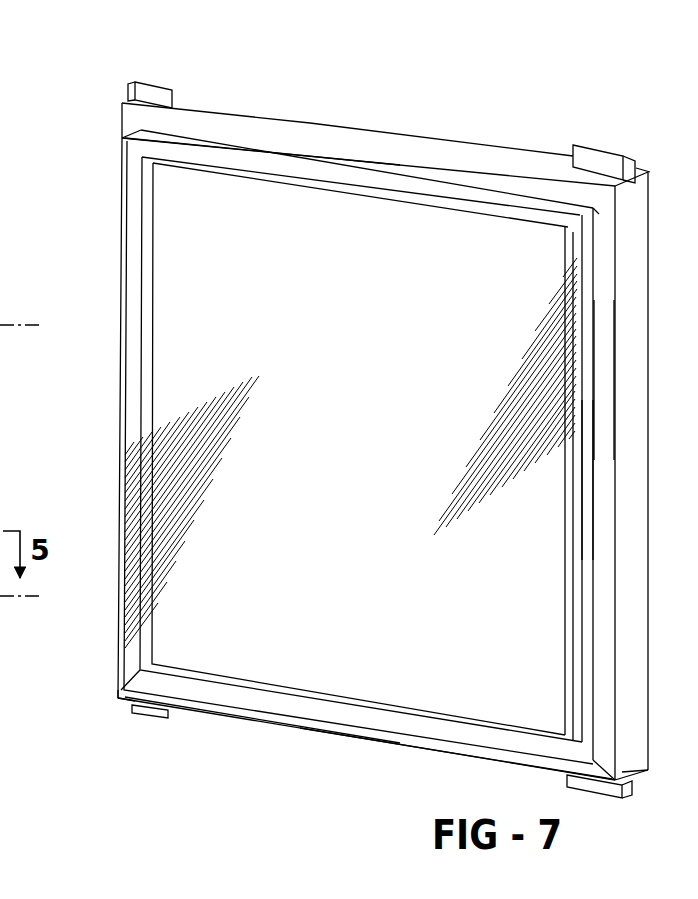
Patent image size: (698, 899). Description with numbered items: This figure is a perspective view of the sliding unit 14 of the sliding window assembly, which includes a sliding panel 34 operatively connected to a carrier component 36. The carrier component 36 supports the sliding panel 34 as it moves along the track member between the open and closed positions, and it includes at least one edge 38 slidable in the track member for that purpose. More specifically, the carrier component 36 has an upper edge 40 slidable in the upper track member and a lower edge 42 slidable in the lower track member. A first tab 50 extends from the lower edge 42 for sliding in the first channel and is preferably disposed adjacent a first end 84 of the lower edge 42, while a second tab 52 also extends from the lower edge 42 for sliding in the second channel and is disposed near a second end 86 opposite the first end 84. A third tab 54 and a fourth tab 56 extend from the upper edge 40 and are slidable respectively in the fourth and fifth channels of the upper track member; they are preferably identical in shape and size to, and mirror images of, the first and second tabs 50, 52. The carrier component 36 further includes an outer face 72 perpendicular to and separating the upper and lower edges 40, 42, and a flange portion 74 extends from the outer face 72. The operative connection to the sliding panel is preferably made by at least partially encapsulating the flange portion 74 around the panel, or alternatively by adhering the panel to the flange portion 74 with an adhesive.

The sliding unit 14 is at (436, 114).
The sliding panel 34 is at (550, 512).
The carrier component 36 is at (644, 325).
The edge 38 is at (293, 103).
The upper edge 40 is at (333, 126).
The lower edge 42 is at (362, 753).
The first tab 50 is at (598, 800).
The second tab 52 is at (137, 715).
The third tab 54 is at (608, 150).
The fourth tab 56 is at (158, 90).
The outer face 72 is at (604, 377).
The flange portion 74 is at (588, 478).
The first end 84 is at (638, 776).
The second end 86 is at (118, 702).